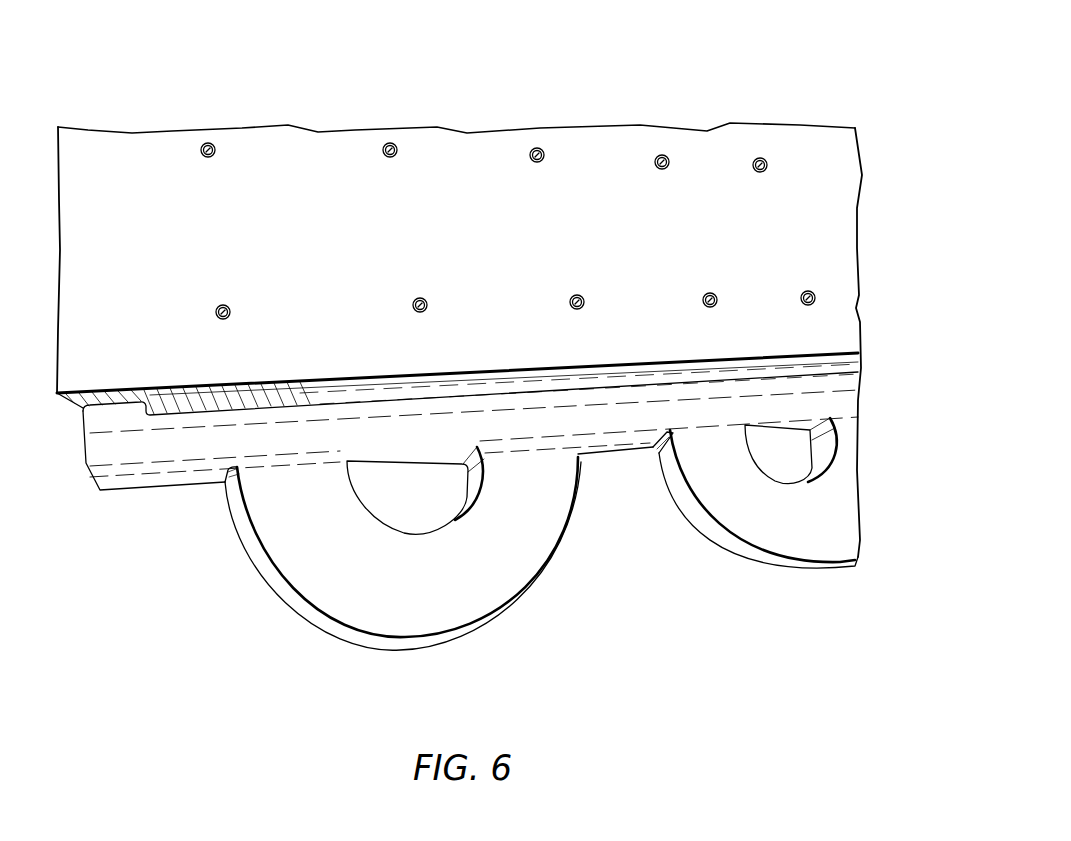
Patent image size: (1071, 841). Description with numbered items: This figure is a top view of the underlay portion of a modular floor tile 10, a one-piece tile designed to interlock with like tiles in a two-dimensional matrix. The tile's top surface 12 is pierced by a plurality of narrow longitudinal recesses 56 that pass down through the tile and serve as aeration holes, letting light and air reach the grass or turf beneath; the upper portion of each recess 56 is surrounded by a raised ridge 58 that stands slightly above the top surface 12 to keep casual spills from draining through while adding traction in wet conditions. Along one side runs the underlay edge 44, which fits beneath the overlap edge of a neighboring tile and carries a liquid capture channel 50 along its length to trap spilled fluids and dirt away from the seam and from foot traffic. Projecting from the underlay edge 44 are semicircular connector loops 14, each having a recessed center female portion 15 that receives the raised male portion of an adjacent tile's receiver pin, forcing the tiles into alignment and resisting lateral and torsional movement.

The modular floor tile 10 is at (459, 330).
The top surface 12 is at (321, 238).
The connector loop 14 is at (328, 541).
The recessed center female portion 15 is at (419, 510).
The underlay edge 44 is at (633, 424).
The liquid capture channel 50 is at (458, 380).
The longitudinal recess 56 is at (397, 151).
The raised ridge 58 is at (204, 157).